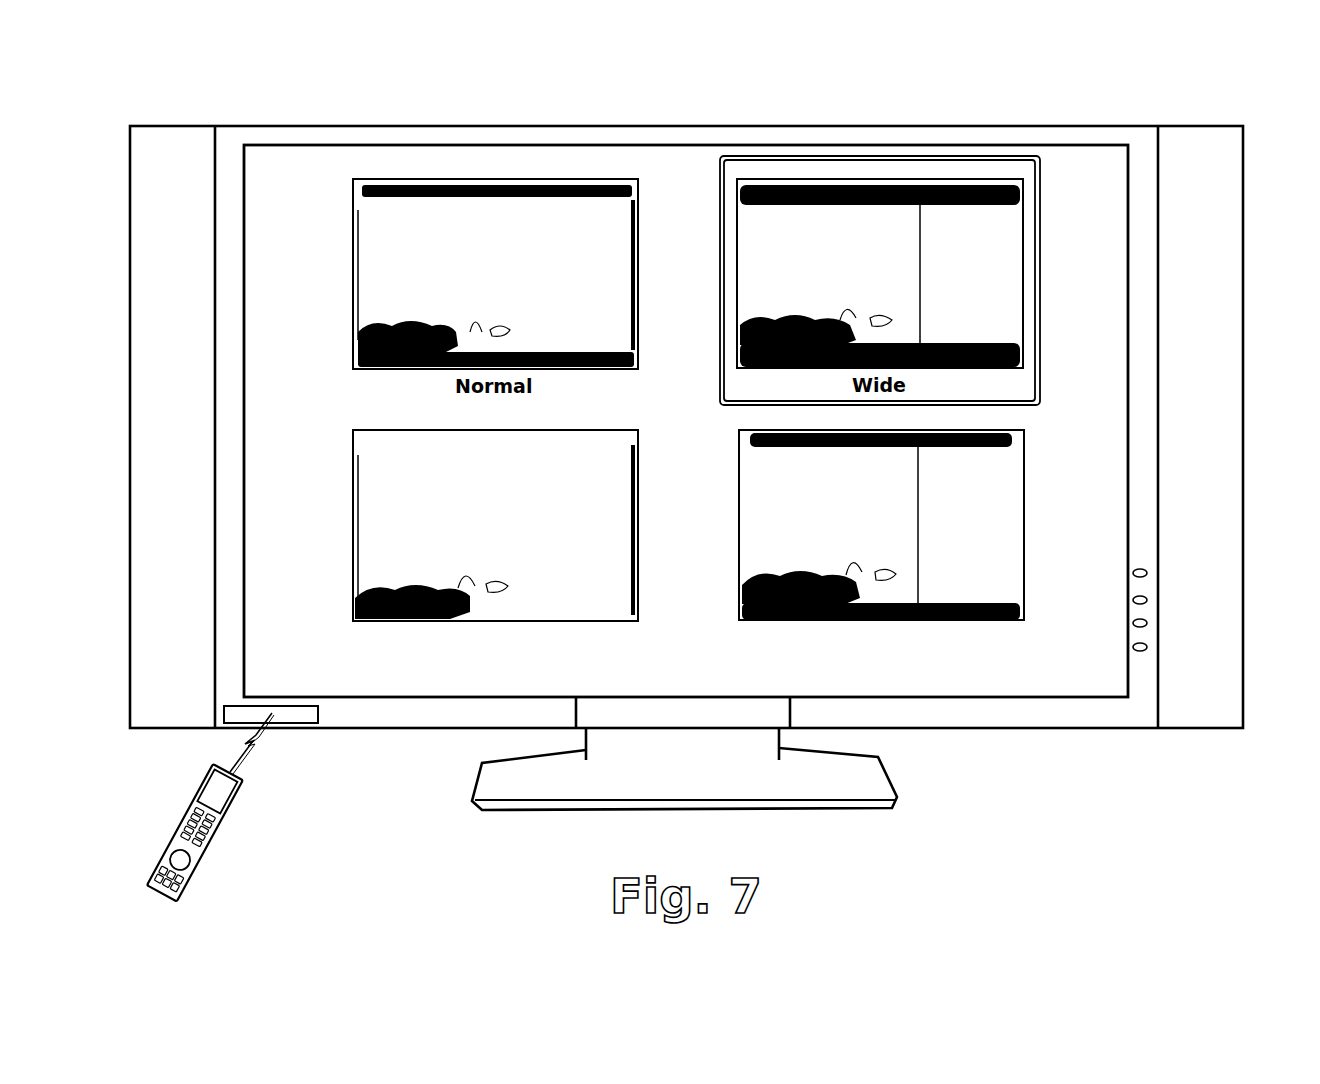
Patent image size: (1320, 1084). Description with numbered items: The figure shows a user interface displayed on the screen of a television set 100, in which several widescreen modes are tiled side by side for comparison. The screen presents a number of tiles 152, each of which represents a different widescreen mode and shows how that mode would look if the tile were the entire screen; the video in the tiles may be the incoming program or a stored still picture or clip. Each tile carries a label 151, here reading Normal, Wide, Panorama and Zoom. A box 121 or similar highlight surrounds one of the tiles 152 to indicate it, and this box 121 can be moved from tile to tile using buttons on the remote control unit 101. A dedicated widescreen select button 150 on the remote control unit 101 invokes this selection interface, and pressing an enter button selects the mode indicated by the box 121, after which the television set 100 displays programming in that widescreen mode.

The television set 100 is at (1193, 700).
The remote control unit 101 is at (170, 844).
The box 121 is at (762, 156).
The widescreen select button 150 is at (180, 887).
The label 151 is at (897, 650).
The tiles 152 is at (740, 620).